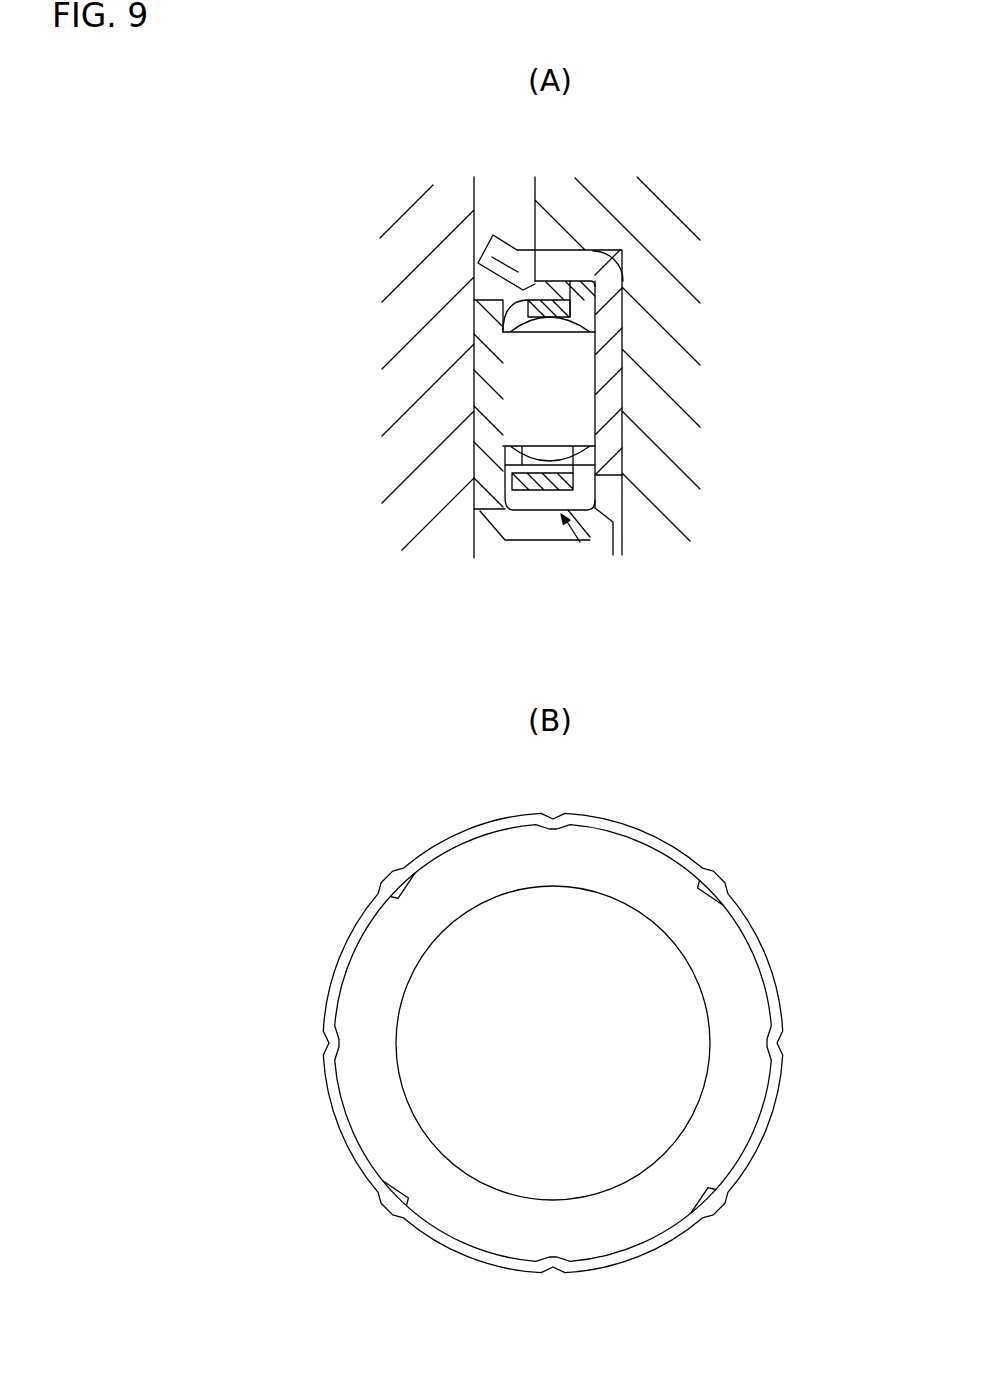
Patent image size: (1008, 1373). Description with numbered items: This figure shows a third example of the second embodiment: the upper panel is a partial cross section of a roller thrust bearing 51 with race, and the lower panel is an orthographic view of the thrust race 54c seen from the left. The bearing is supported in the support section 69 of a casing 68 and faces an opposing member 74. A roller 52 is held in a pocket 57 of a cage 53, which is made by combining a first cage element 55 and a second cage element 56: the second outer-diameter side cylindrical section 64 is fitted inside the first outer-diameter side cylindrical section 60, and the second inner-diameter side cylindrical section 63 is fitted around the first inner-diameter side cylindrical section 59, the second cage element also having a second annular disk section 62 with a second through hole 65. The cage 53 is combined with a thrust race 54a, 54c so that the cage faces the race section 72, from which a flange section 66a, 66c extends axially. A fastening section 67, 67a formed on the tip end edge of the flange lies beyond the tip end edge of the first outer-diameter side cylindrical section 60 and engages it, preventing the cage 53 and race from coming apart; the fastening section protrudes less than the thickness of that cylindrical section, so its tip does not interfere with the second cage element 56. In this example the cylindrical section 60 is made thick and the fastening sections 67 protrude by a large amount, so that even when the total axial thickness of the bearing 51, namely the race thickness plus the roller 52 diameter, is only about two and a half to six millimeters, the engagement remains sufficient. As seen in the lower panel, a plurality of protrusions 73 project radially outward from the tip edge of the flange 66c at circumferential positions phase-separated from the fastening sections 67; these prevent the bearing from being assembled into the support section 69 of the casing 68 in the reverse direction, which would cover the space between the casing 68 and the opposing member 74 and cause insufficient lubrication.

The roller thrust bearing 51 is at (526, 377).
The roller 52 is at (515, 400).
The cage 53 is at (582, 543).
The thrust race 54a is at (466, 363).
The thrust race 54c is at (631, 398).
The first cage element 55 is at (597, 290).
The second cage element 56 is at (483, 317).
The pocket 57 is at (598, 452).
The first inner-diameter side cylindrical section 59 is at (527, 514).
The first outer-diameter side cylindrical section 60 is at (560, 250).
The second annular disk section 62 is at (505, 495).
The second inner-diameter side cylindrical section 63 is at (492, 540).
The second outer-diameter side cylindrical section 64 is at (547, 310).
The second through hole 65 is at (503, 453).
The flange section 66a is at (503, 548).
The flange section 66c is at (590, 280).
The fastening section 67 is at (518, 288).
The fastening section 67a is at (598, 492).
The casing 68 is at (647, 213).
The support section 69 is at (625, 250).
The race section 72 is at (607, 362).
The protrusion for preventing reverse assembly 73 is at (487, 228).
The opposing member 74 is at (425, 432).